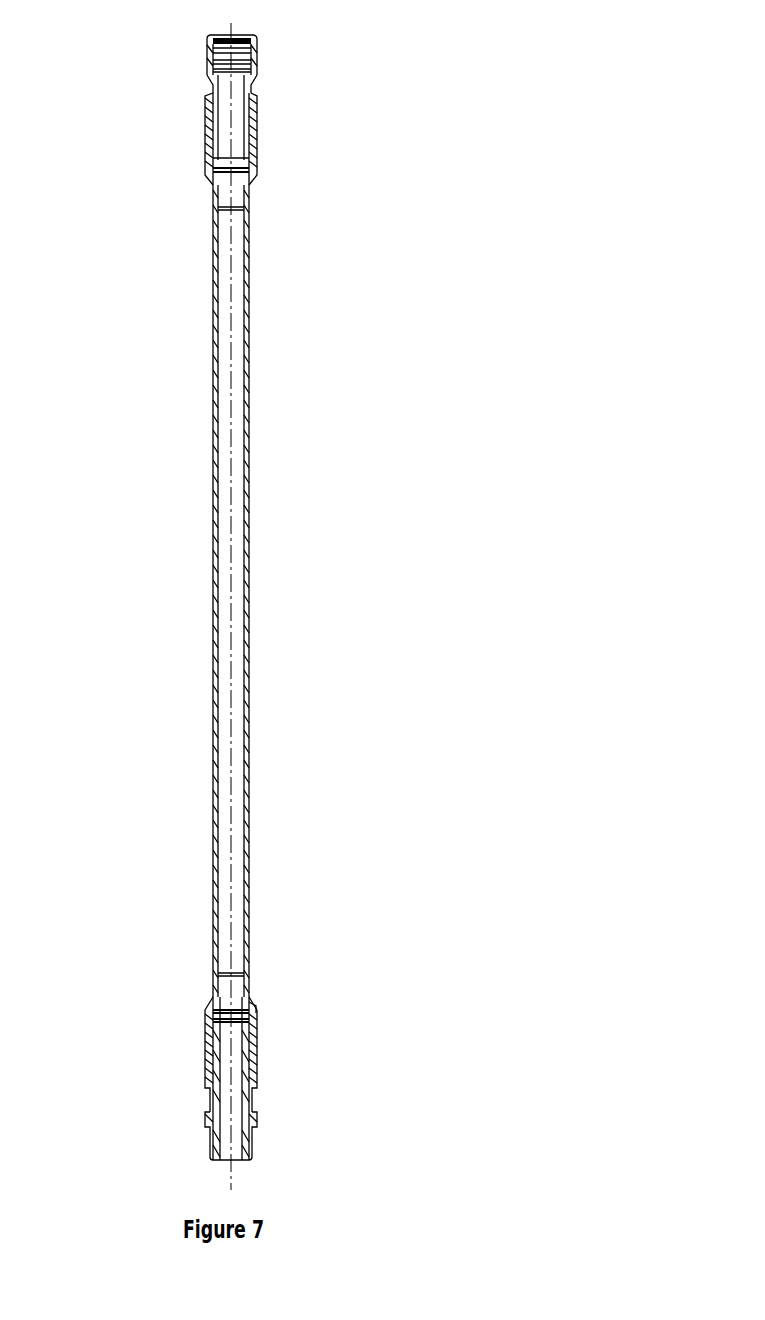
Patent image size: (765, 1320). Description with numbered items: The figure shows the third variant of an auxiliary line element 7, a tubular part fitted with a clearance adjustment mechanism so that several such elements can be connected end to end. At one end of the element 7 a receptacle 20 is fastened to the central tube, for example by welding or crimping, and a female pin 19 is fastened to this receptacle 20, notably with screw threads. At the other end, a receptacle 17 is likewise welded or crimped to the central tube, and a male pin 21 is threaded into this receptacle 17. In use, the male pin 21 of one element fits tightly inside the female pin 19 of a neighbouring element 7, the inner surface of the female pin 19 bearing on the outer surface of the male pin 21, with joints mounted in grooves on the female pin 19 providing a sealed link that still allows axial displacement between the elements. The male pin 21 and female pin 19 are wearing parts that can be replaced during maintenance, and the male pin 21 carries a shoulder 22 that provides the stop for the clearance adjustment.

The auxiliary line element 7 is at (249, 575).
The receptacle 17 is at (255, 1012).
The female pin 19 is at (257, 70).
The receptacle 20 is at (257, 175).
The male pin 21 is at (215, 1097).
The shoulder 22 is at (250, 1120).